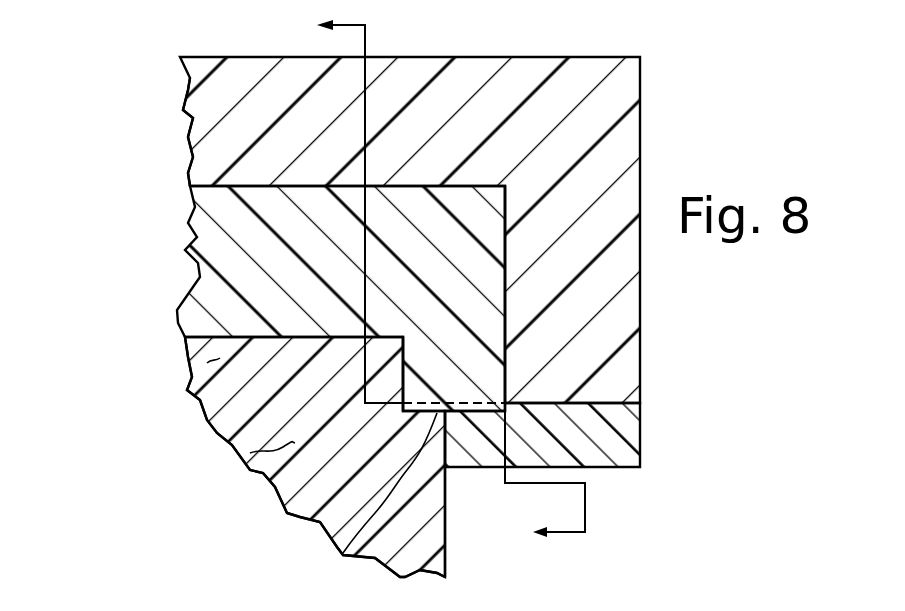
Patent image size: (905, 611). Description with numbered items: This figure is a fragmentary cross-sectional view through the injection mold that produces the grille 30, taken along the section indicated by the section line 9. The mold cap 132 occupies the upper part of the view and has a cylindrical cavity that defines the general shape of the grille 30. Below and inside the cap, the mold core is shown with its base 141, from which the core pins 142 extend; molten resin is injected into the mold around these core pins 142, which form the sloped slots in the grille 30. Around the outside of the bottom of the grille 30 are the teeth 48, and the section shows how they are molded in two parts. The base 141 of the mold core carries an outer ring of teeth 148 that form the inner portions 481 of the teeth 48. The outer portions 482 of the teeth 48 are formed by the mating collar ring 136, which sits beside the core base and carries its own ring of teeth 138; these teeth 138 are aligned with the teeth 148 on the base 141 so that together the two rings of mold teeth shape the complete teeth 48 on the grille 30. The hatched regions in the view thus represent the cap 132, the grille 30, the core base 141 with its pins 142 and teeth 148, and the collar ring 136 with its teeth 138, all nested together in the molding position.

The section line 9- 9 is at (440, 280).
The grille 30 is at (200, 277).
The teeth 48 is at (506, 402).
The cap 132 is at (193, 117).
The mating collar ring 136 is at (642, 452).
The ring of teeth 138 is at (477, 420).
The base 141 is at (255, 478).
The core pins 142 is at (192, 390).
The outer ring of teeth 148 is at (343, 553).
The inner portions of the teeth 481 is at (444, 465).
The outer portions of the teeth 482 is at (473, 404).